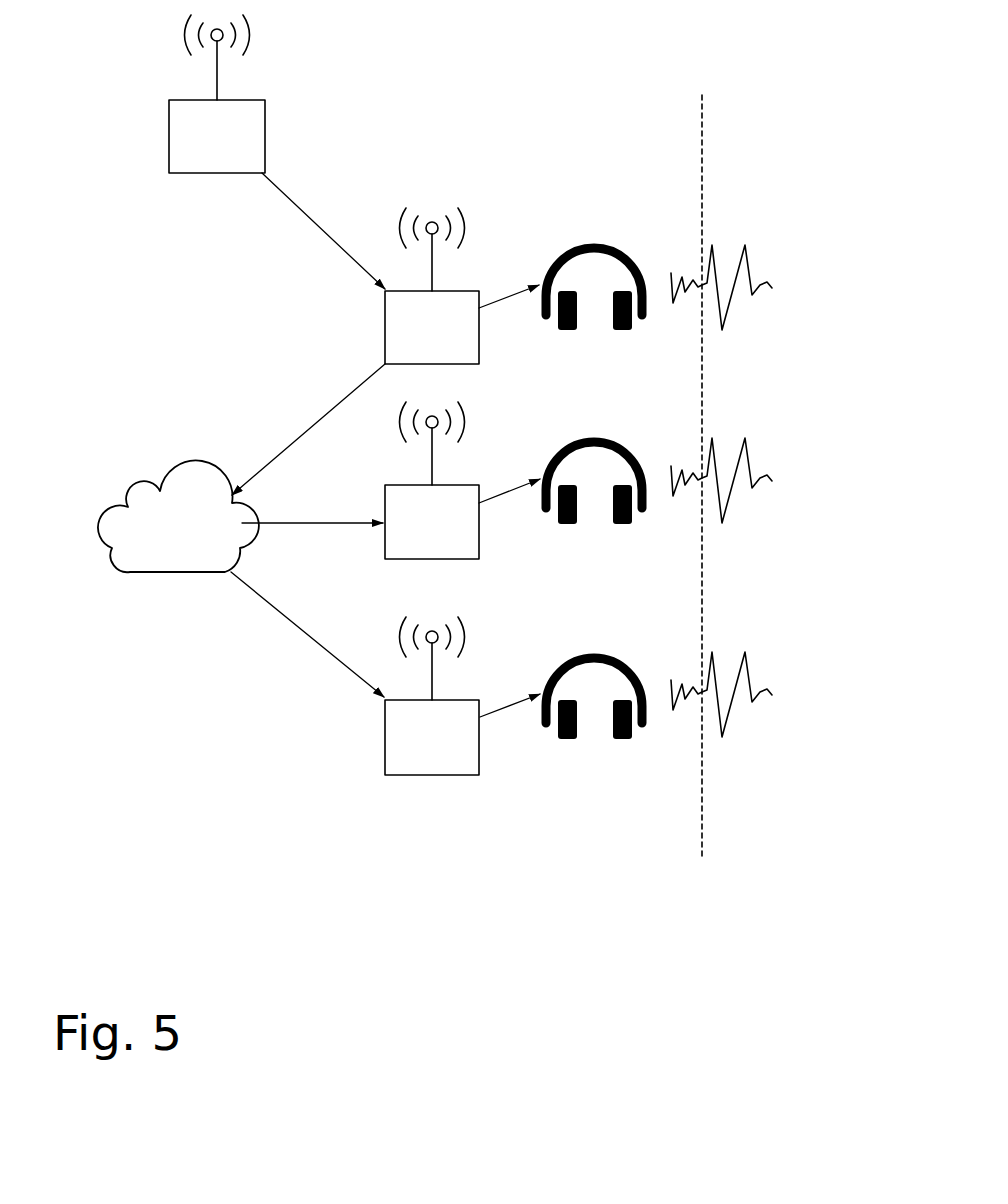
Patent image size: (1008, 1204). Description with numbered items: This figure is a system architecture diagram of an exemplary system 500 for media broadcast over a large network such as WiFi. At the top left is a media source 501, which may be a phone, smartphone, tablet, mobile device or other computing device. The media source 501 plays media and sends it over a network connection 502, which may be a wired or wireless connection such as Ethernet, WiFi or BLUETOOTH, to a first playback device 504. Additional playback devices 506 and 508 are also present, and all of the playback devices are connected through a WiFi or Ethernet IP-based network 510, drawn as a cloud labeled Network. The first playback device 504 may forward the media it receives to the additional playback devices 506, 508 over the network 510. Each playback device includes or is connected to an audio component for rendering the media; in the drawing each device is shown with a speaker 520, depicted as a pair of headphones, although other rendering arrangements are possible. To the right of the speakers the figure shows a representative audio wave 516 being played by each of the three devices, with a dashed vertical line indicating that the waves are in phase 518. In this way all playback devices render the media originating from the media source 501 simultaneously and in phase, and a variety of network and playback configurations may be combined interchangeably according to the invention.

The system 500 is at (267, 772).
The media source 501 is at (217, 173).
The network connection 502 is at (448, 215).
The first playback device 504 is at (385, 327).
The additional playback device 506 is at (479, 520).
The additional playback device 508 is at (432, 776).
The network 510 is at (170, 573).
The audio wave 516 is at (752, 272).
The in phase 518 is at (702, 827).
The speaker 520 is at (597, 243).